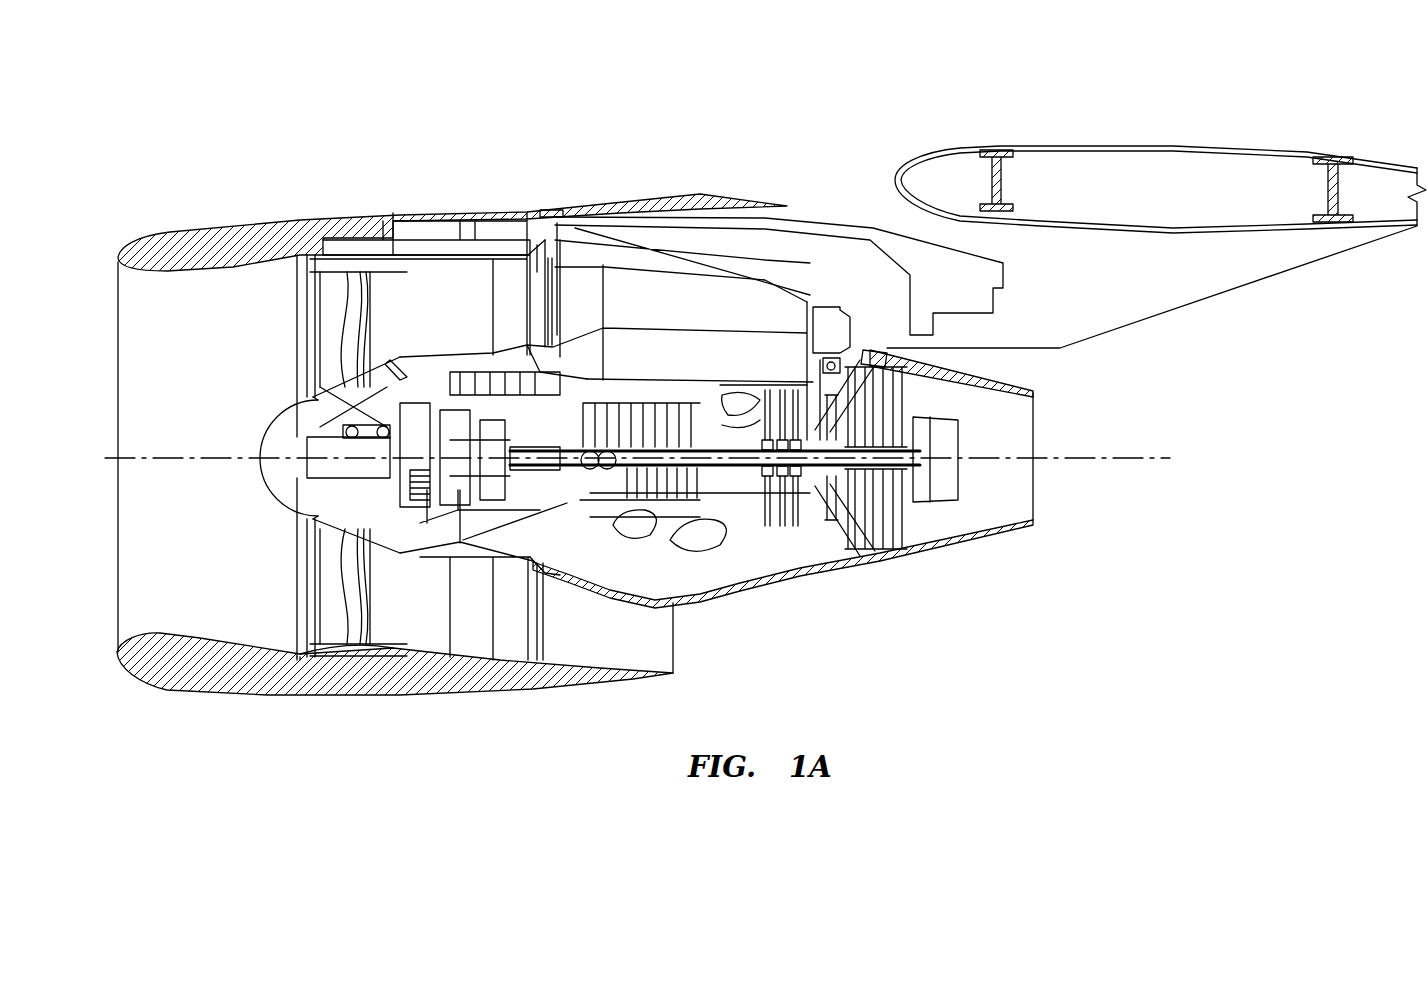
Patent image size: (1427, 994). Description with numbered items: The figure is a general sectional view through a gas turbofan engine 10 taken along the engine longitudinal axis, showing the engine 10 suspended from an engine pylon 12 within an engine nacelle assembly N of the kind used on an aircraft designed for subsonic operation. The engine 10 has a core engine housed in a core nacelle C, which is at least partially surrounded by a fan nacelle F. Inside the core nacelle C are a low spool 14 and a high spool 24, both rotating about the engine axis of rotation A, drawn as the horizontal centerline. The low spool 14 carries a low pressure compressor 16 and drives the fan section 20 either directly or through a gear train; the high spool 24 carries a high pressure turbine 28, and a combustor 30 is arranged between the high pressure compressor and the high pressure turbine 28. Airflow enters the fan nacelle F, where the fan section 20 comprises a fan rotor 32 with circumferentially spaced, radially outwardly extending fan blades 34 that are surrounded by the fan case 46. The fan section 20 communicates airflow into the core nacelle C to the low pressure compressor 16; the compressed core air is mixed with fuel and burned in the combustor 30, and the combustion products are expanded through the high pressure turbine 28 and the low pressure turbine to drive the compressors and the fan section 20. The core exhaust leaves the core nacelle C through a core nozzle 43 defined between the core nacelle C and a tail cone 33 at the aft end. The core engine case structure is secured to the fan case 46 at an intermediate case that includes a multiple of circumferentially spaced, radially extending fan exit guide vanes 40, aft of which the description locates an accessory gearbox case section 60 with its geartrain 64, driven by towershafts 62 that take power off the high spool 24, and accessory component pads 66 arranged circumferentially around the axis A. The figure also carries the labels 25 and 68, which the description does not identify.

The gas turbofan engine 10 is at (370, 183).
The engine pylon 12 is at (748, 223).
The low spool 14 is at (540, 465).
The low pressure compressor 16 is at (497, 380).
The fan section 20 is at (318, 700).
The high spool 24 is at (767, 513).
The fan drive gear system 25 is at (418, 553).
The high pressure turbine 28 is at (800, 523).
The combustor 30 is at (740, 513).
The fan rotor 32 is at (287, 518).
The tail cone 33 is at (958, 497).
The fan blades 34 is at (327, 583).
The fan exit guide vanes 40 is at (508, 288).
The core nozzle 43 is at (1033, 432).
The fan case 46 is at (396, 665).
The accessory gearbox case section 60 is at (393, 424).
The towershaft 62 is at (543, 575).
The geartrain 64 is at (575, 490).
The accessory component pad 66 is at (843, 477).
The bearing #5 68 is at (822, 393).
The engine axis of rotation A is at (1130, 462).
The core nacelle C is at (750, 540).
The fan nacelle F is at (250, 680).
The engine nacelle assembly N is at (562, 695).